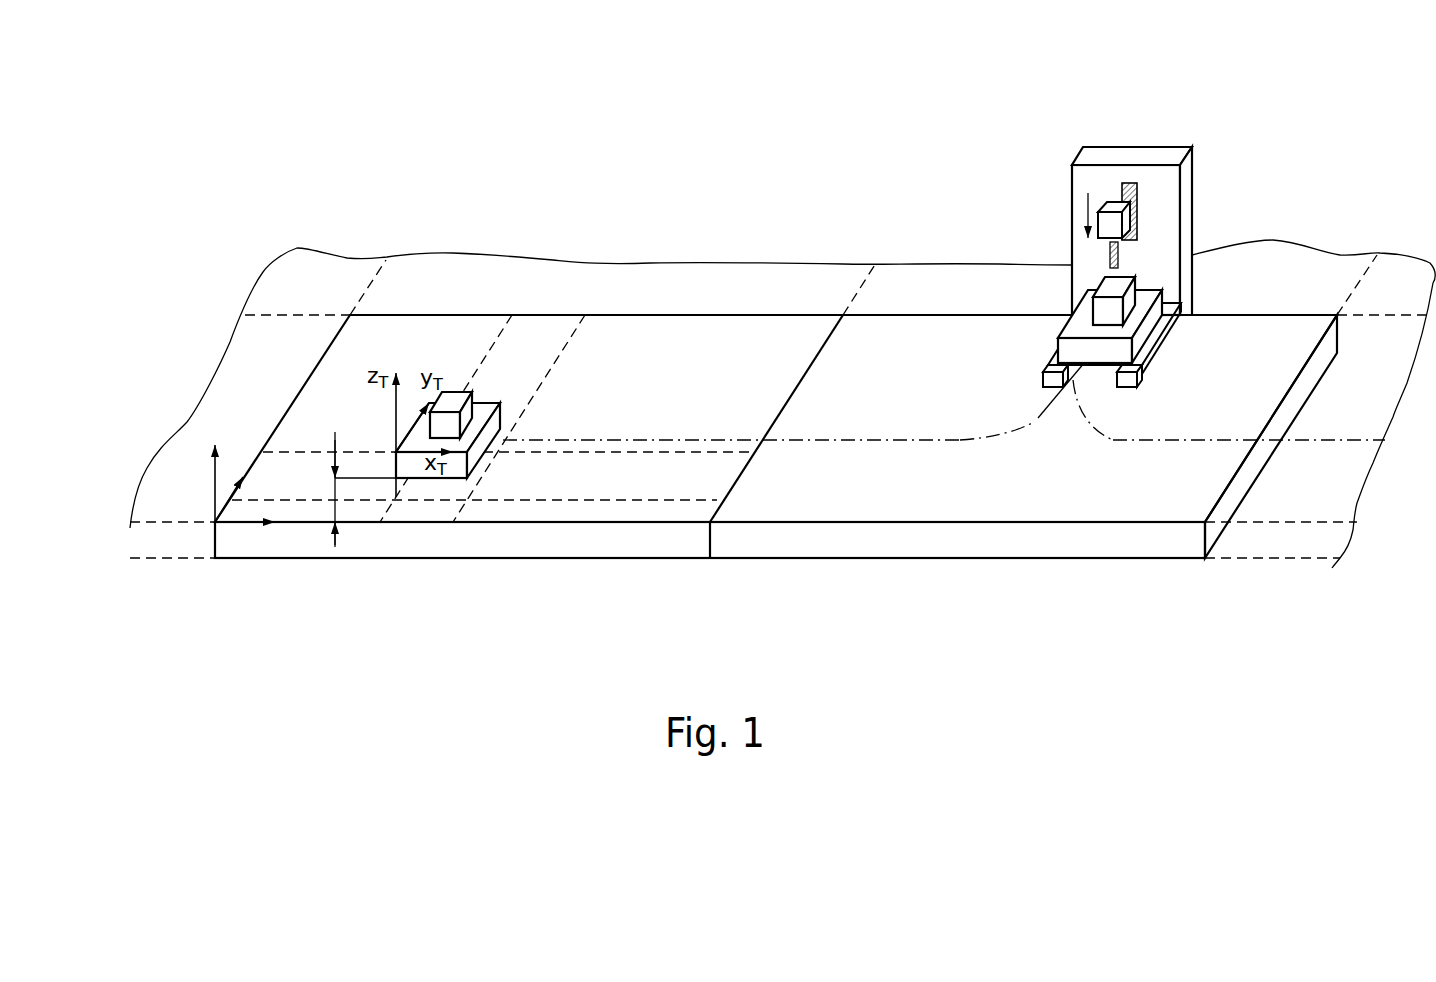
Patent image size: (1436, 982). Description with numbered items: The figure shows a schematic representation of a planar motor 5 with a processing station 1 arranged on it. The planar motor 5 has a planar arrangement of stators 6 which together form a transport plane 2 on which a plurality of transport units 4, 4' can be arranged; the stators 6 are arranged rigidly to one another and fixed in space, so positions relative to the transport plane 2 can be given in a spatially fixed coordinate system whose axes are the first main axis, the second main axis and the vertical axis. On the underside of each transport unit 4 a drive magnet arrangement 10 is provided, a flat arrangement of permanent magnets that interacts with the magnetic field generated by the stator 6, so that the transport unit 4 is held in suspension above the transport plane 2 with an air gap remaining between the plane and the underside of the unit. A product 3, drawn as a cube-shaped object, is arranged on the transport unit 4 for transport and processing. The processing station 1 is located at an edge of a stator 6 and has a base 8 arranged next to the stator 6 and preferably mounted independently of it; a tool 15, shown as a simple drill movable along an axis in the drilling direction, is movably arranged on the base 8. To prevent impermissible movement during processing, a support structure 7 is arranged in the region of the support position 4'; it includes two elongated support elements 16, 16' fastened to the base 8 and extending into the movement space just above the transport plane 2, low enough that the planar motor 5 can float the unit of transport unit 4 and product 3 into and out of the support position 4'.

The processing station 1 is at (1253, 130).
The transport plane 2 is at (682, 342).
The product 3 is at (458, 402).
The transport unit 4 is at (514, 396).
The support position 4' is at (1064, 326).
The planar motor 5 is at (368, 570).
The stator 6 is at (513, 535).
The support structure 7 is at (1175, 327).
The base 8 is at (1128, 158).
The drive magnet arrangement 10 is at (490, 428).
The tool 15 is at (1112, 220).
The support element 16 is at (1006, 387).
The support element 16' is at (1174, 387).